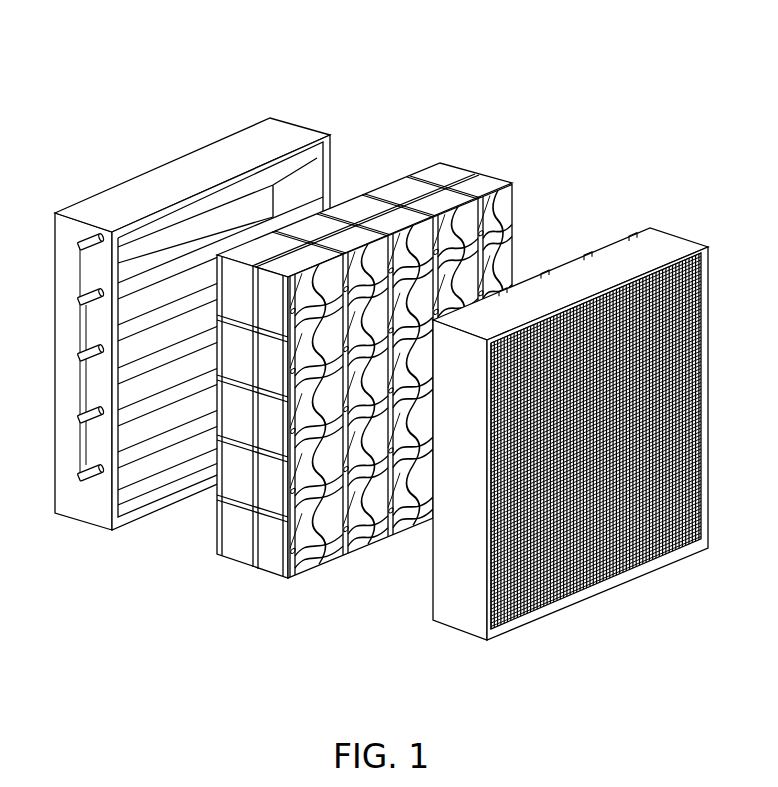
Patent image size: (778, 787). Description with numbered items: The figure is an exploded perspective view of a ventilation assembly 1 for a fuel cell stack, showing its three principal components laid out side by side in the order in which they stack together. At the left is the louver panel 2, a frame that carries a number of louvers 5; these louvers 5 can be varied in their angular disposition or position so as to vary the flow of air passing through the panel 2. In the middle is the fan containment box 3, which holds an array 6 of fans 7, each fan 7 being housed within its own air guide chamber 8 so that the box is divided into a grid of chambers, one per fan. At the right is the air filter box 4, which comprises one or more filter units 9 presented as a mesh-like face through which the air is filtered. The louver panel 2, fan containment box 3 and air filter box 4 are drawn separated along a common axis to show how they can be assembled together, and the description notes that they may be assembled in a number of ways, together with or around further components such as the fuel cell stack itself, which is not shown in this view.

The ventilation assembly 1 is at (386, 337).
The louver panel 2 is at (300, 127).
The fan containment box 3 is at (483, 180).
The air filter box 4 is at (687, 238).
The louvers 5 is at (120, 365).
The array 6 is at (375, 577).
The fans 7 is at (430, 217).
The air guide chamber 8 is at (457, 285).
The filter units 9 is at (697, 363).